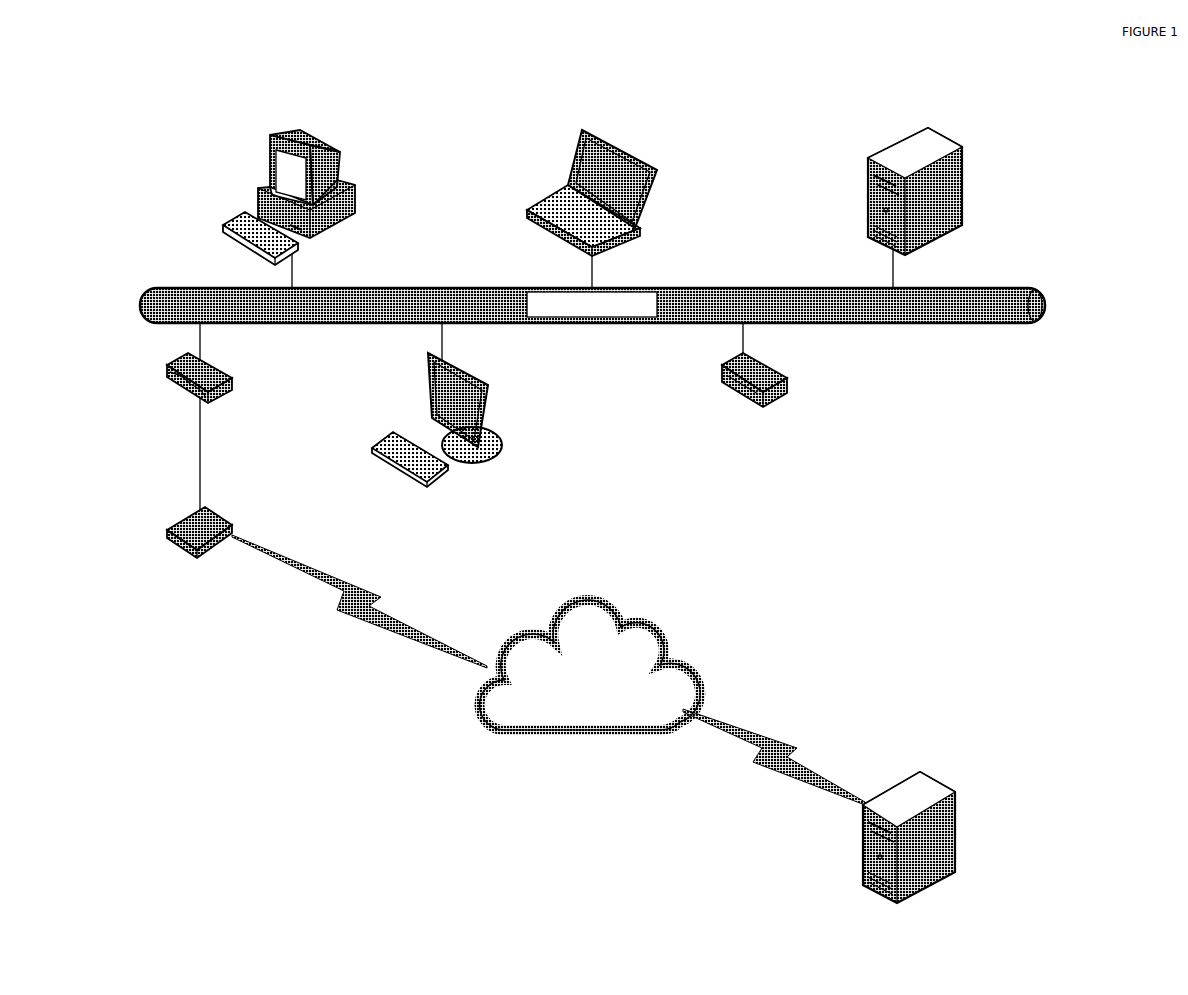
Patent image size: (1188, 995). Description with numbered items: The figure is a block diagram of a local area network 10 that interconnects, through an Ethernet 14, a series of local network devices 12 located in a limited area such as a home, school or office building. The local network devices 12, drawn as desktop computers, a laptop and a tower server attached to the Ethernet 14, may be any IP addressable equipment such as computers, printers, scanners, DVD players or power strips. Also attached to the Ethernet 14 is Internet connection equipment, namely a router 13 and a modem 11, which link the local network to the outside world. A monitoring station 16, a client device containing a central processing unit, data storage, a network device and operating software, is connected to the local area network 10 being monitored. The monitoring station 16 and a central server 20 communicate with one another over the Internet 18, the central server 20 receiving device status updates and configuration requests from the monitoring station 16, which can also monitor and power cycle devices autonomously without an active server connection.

The local area network 10 is at (1083, 230).
The modem 11 is at (218, 513).
The local network devices 12 is at (315, 137).
The router 13 is at (233, 382).
The Ethernet 14 is at (1037, 322).
The monitoring station 16 is at (770, 405).
The Internet 18 is at (652, 622).
The central server 20 is at (923, 772).